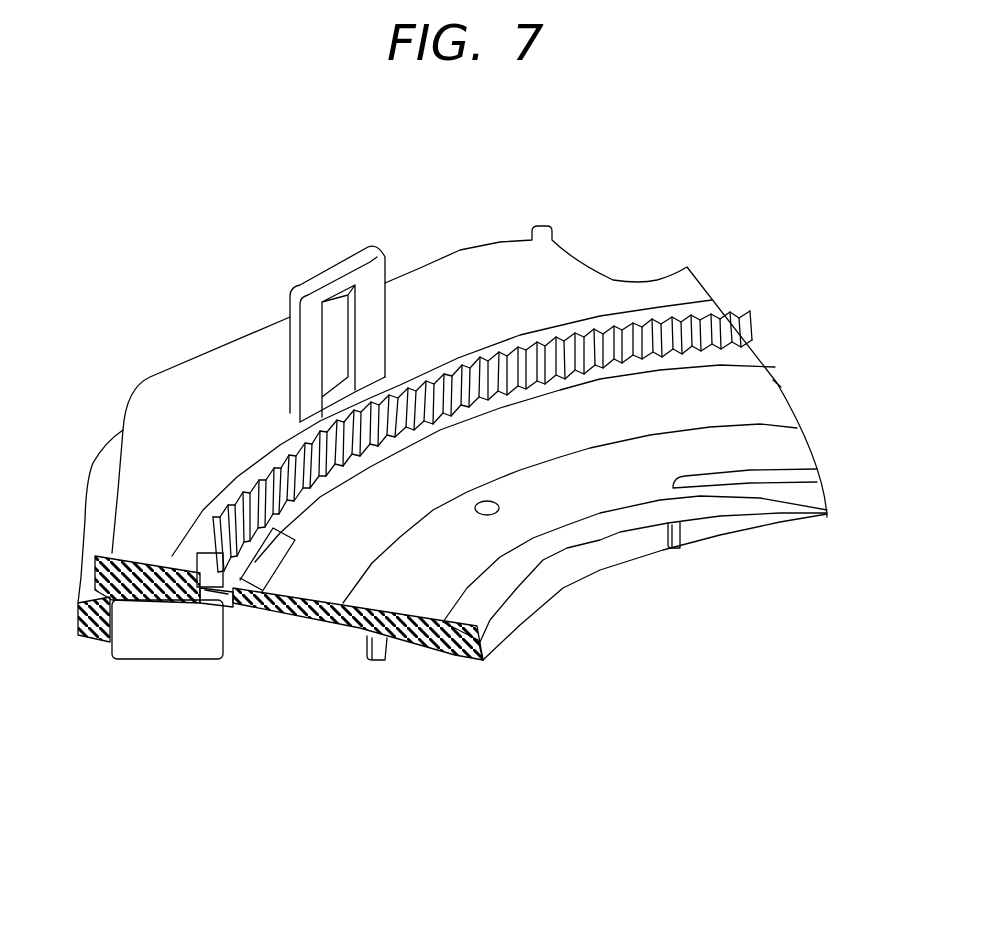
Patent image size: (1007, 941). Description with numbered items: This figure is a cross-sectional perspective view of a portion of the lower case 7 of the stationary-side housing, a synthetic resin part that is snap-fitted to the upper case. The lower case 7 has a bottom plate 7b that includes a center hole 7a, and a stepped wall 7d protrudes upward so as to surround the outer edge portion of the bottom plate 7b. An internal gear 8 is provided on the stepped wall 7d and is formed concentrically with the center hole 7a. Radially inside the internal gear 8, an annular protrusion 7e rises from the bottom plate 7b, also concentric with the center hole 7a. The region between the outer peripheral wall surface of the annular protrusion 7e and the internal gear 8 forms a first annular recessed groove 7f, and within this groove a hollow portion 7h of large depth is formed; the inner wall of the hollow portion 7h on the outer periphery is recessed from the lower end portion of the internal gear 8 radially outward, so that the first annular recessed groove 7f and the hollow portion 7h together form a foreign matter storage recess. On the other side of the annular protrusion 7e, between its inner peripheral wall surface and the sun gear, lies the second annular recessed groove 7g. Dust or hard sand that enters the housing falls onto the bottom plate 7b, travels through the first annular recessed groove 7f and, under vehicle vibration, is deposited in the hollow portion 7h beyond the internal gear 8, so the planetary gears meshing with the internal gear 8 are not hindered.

The lower case 7 is at (560, 199).
The internal gear 8 is at (462, 364).
The center hole 7a is at (528, 627).
The bottom plate 7b is at (162, 600).
The stepped wall 7d is at (293, 448).
The annular protrusion 7e is at (300, 577).
The first annular recessed groove 7f is at (273, 528).
The second annular recessed groove 7g is at (357, 595).
The hollow portion 7h is at (237, 583).